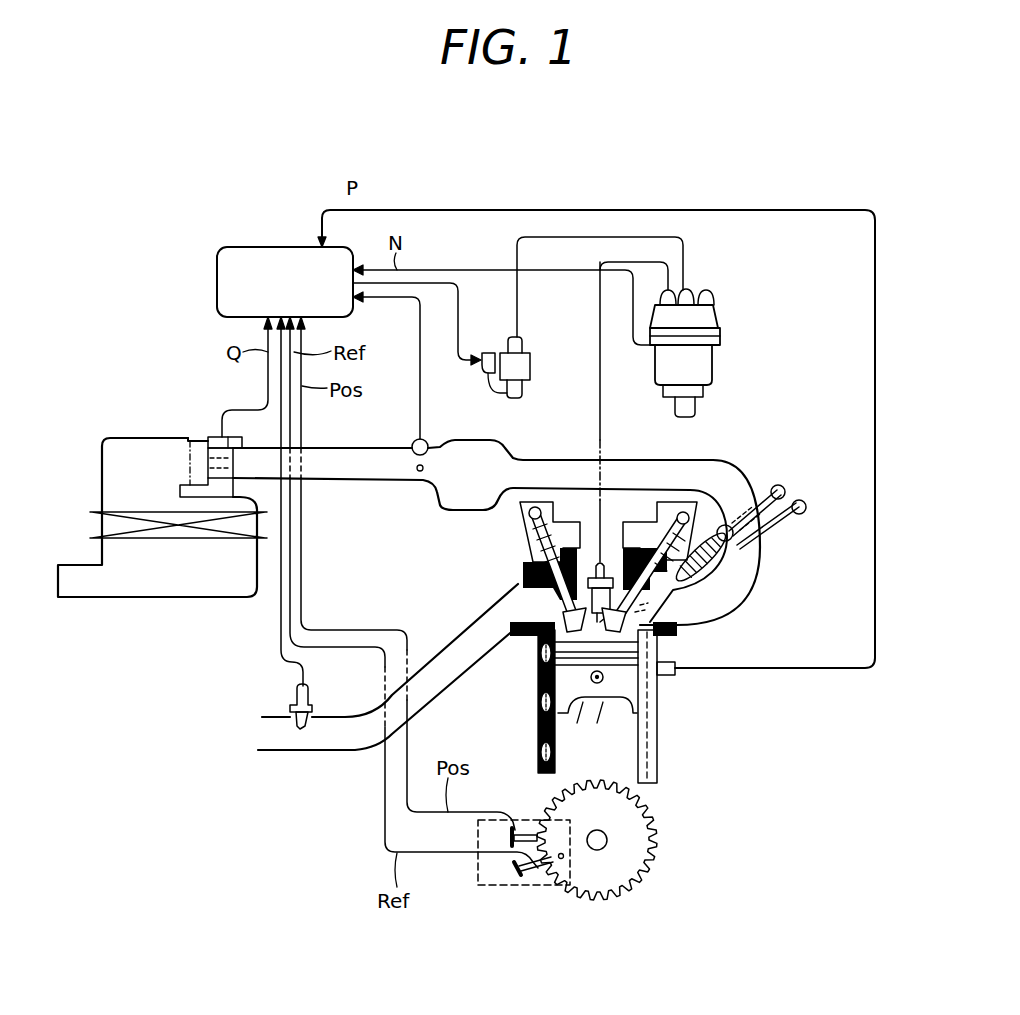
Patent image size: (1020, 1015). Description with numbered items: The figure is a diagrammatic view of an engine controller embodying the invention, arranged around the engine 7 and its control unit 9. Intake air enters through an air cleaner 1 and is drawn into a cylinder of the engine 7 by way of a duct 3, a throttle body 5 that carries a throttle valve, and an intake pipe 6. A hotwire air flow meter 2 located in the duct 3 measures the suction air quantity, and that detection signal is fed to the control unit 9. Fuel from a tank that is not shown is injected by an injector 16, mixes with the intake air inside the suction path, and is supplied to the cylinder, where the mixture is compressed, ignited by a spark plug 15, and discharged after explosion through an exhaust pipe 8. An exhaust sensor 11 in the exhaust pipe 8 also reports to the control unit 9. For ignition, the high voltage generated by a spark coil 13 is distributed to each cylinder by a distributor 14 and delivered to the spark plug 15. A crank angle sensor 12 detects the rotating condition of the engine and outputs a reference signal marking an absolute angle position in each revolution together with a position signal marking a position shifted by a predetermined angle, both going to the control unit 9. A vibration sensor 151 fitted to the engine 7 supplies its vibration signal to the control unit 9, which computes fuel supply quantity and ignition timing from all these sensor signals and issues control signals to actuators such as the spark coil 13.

The air cleaner 1 is at (100, 598).
The hotwire air flow meter 2 is at (212, 437).
The duct 3 is at (345, 448).
The throttle body 5 is at (420, 471).
The intake pipe 6 is at (722, 613).
The engine 7 is at (496, 718).
The exhaust pipe 8 is at (439, 648).
The control unit 9 is at (252, 247).
The exhaust sensor 11 is at (290, 708).
The crank angle sensor 12 is at (475, 872).
The spark coil 13 is at (532, 364).
The distributor 14 is at (720, 340).
The spark plug 15 is at (602, 562).
The injector 16 is at (757, 572).
The vibration sensor 151 is at (675, 674).